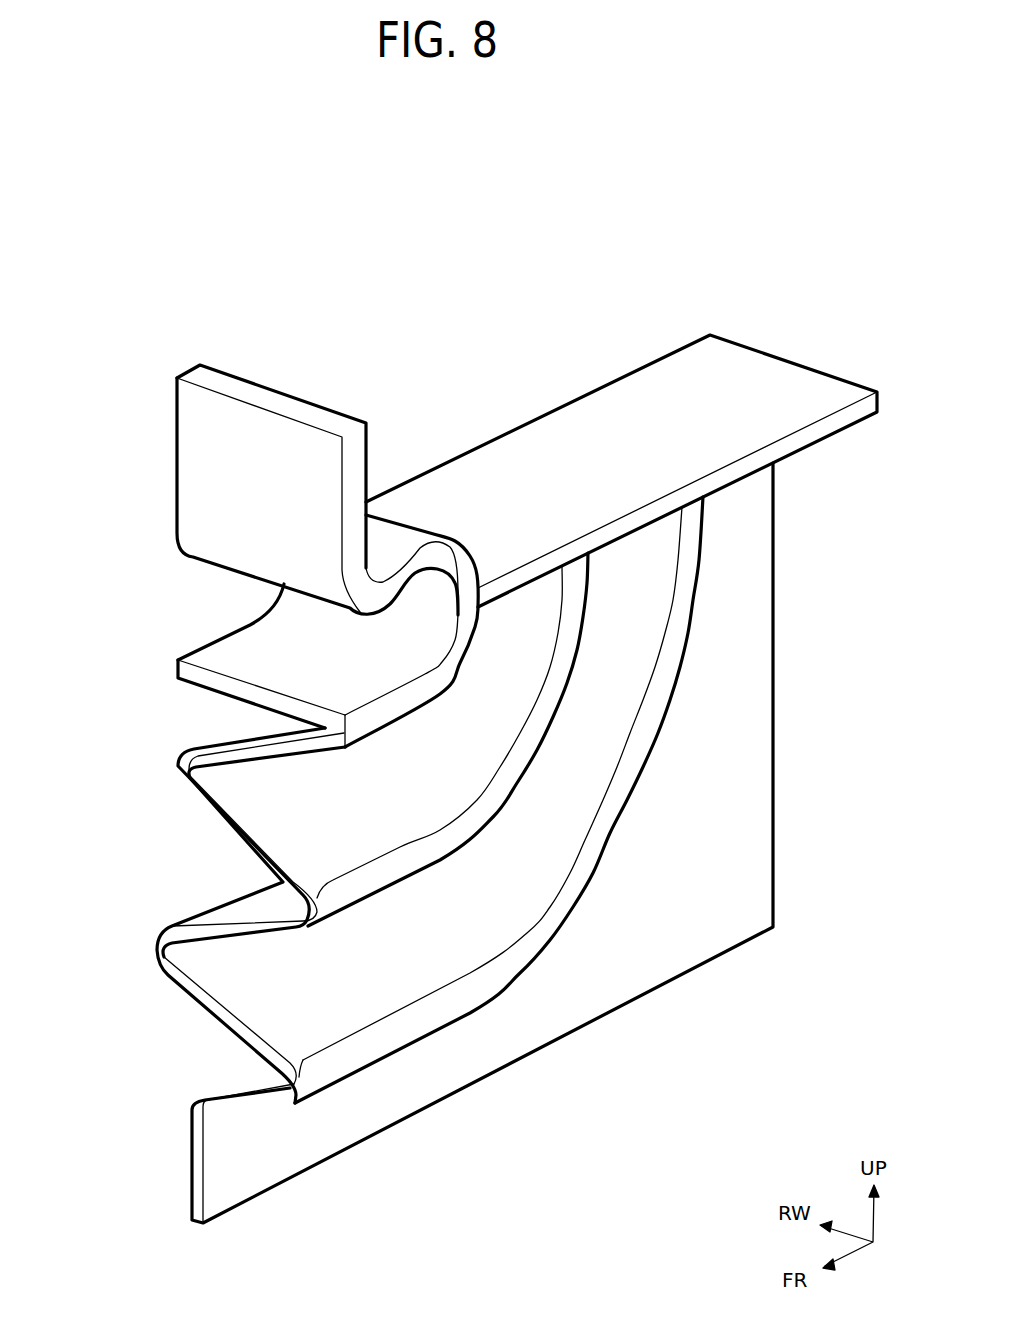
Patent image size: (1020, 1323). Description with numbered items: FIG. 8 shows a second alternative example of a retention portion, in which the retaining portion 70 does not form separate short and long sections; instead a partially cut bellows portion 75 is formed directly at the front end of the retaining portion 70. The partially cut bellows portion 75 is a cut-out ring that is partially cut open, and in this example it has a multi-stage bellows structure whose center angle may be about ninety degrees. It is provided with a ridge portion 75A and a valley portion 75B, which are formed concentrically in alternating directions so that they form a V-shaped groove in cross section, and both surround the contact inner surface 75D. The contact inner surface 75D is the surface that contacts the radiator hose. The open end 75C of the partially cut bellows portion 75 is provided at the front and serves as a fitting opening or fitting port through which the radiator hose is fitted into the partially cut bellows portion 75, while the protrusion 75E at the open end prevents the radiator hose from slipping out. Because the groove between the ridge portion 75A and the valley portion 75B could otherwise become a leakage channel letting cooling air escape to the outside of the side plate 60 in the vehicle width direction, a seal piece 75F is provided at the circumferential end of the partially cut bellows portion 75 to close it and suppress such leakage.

The side plate 60 is at (413, 245).
The retaining portion 70 is at (467, 758).
The partially cut bellows portion 75 is at (410, 522).
The ridge portion 75A is at (354, 727).
The valley portion 75B is at (178, 764).
The open end 75C is at (213, 600).
The contact inner surface 75D is at (430, 637).
The protrusion 75E is at (363, 616).
The seal piece 75F is at (610, 412).